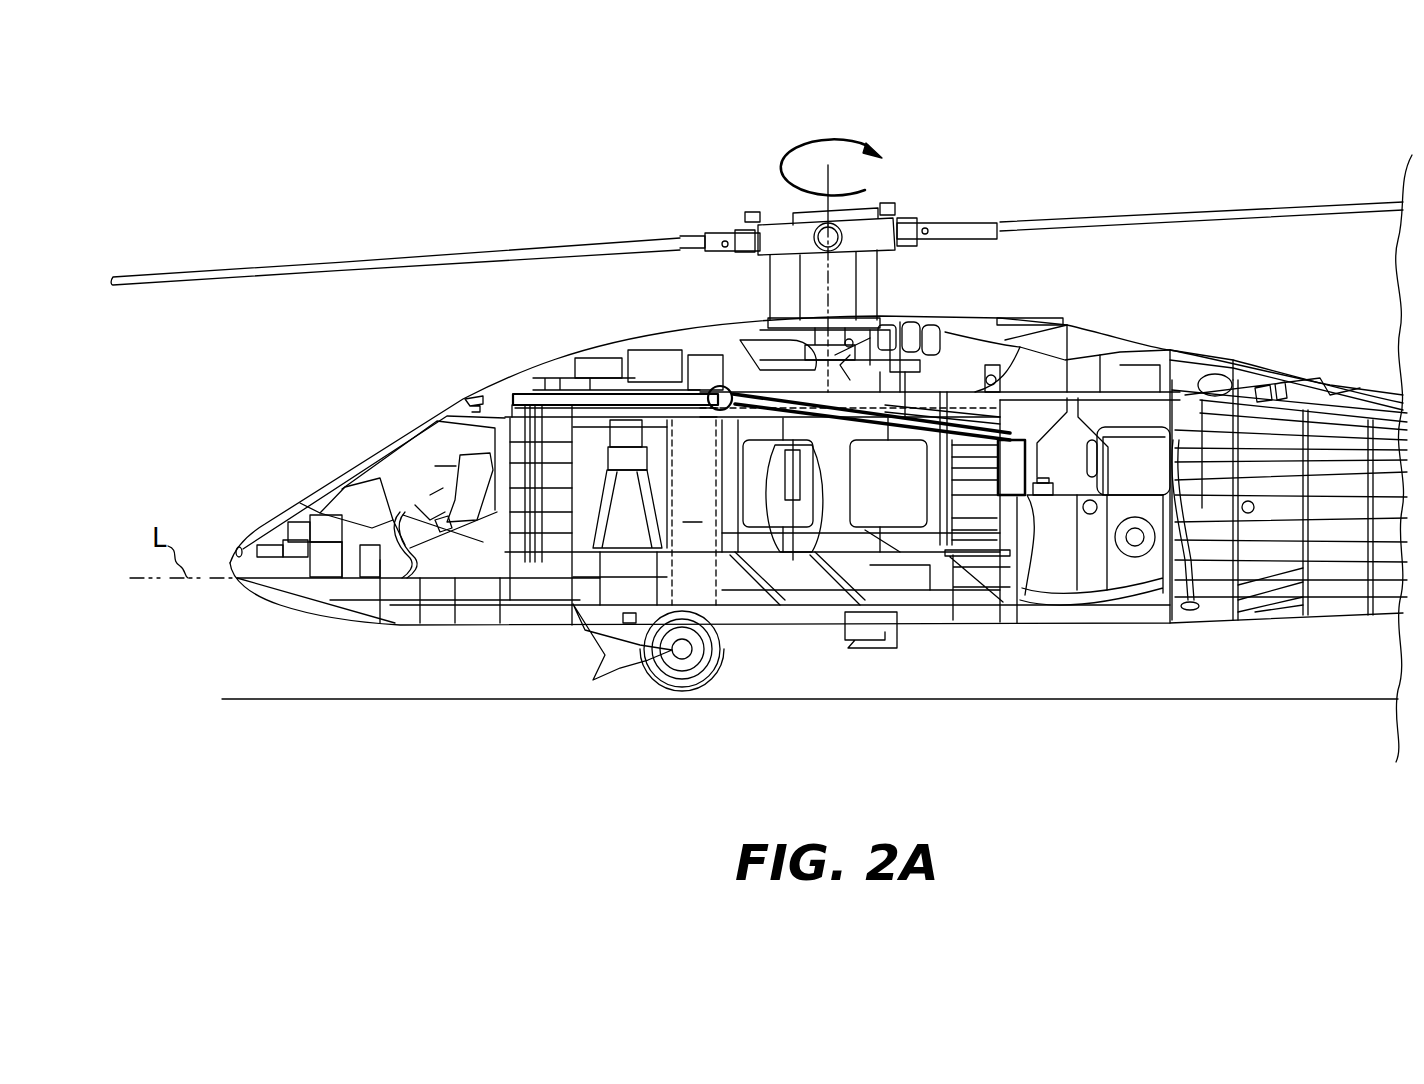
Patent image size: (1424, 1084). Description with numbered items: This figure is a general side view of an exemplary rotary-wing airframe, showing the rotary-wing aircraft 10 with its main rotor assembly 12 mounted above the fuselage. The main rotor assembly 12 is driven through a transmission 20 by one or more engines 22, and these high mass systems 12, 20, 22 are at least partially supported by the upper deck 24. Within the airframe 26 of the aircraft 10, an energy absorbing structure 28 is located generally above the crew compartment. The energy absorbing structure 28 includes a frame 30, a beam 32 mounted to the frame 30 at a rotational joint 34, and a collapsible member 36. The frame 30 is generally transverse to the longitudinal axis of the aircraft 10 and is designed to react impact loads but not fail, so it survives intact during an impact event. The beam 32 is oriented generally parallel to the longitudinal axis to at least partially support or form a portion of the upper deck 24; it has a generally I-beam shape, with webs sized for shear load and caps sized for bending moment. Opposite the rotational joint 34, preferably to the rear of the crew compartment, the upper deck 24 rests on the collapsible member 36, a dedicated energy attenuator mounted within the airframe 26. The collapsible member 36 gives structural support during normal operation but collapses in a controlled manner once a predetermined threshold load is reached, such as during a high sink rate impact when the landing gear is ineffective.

The rotary-wing aircraft 10 is at (1205, 197).
The main rotor assembly 12 is at (878, 237).
The transmission 20 is at (868, 307).
The engines 22 is at (1005, 430).
The upper deck 24 is at (1060, 380).
The airframe 26 is at (1168, 360).
The energy absorbing structure 28 is at (793, 387).
The frame 30 is at (707, 448).
The beam 32 is at (907, 425).
The rotational joint 34 is at (708, 392).
The collapsible member 36 is at (1013, 483).